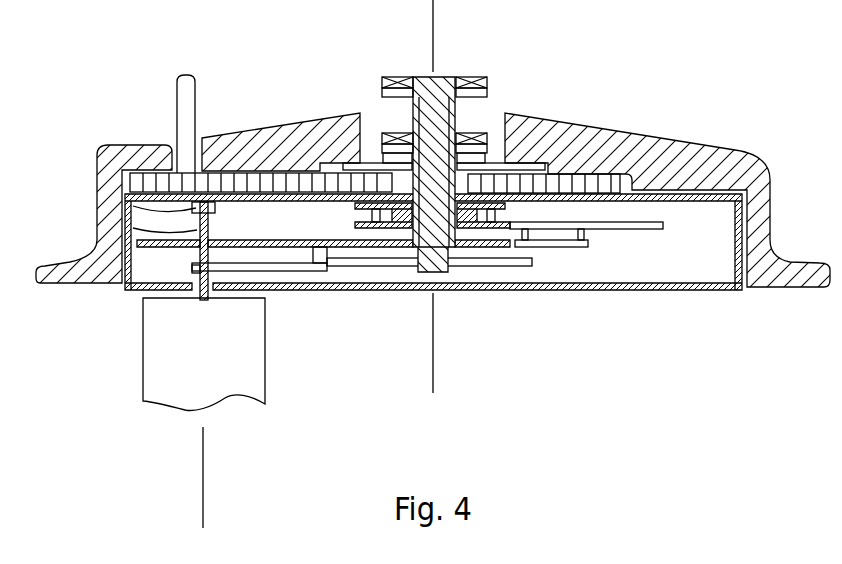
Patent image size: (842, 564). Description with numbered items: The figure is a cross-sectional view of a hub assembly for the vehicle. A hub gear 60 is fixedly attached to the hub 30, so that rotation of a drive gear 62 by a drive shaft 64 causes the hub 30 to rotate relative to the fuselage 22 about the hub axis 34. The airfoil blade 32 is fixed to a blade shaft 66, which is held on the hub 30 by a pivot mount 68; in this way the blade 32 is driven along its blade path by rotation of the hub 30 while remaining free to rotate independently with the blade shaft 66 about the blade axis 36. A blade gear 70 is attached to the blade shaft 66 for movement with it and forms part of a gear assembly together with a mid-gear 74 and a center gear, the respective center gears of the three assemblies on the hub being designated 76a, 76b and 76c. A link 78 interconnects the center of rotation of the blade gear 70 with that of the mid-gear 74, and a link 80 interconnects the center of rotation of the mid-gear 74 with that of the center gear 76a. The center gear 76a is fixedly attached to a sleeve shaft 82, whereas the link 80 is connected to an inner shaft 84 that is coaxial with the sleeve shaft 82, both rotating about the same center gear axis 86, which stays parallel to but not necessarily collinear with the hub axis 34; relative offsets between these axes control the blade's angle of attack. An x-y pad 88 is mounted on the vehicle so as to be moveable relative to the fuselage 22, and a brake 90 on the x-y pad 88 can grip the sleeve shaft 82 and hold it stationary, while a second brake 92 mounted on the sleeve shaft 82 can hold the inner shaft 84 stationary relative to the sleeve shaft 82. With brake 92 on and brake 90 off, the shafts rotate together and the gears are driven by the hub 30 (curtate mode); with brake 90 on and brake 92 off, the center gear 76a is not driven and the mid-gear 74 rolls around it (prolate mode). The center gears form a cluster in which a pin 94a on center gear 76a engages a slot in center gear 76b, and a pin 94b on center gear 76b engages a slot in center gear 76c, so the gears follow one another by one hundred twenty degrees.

The fuselage 22 is at (672, 148).
The hub 30 is at (688, 290).
The blade 32 is at (160, 370).
The hub axis 34 is at (433, 313).
The blade axis 36 is at (203, 480).
The hub gear 60 is at (265, 182).
The drive gear 62 is at (223, 182).
The drive shaft 64 is at (183, 90).
The blade shaft 66 is at (133, 230).
The pivot mount 68 is at (133, 207).
The blade gear 70 is at (173, 248).
The mid-gear 74 is at (337, 250).
The center gear 76a is at (409, 255).
The center gear 76b is at (600, 224).
The center gear 76c is at (522, 242).
The link 78 is at (278, 268).
The link 80 is at (366, 250).
The sleeve shaft 82 is at (392, 135).
The inner shaft 84 is at (428, 85).
The center gear axis 86 is at (436, 57).
The x-y pad 88 is at (530, 166).
The brake 90 is at (485, 140).
The brake 92 is at (407, 115).
The pin 94a is at (475, 215).
The pin 94b is at (360, 207).